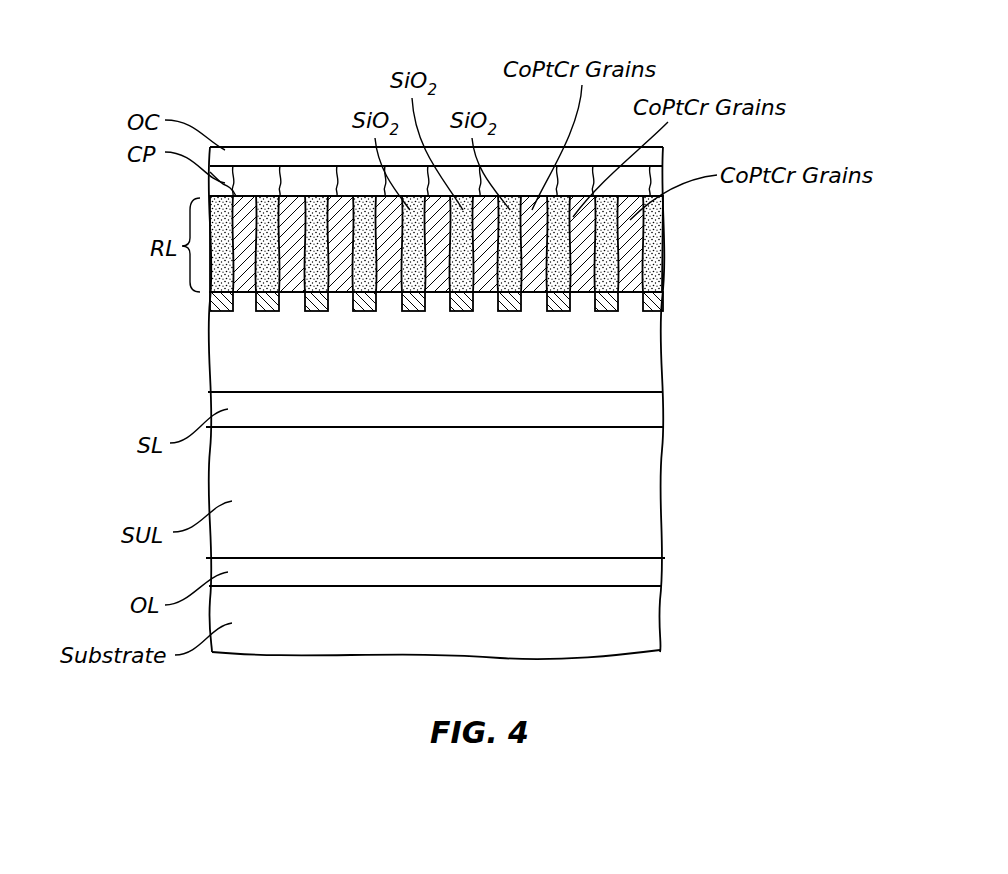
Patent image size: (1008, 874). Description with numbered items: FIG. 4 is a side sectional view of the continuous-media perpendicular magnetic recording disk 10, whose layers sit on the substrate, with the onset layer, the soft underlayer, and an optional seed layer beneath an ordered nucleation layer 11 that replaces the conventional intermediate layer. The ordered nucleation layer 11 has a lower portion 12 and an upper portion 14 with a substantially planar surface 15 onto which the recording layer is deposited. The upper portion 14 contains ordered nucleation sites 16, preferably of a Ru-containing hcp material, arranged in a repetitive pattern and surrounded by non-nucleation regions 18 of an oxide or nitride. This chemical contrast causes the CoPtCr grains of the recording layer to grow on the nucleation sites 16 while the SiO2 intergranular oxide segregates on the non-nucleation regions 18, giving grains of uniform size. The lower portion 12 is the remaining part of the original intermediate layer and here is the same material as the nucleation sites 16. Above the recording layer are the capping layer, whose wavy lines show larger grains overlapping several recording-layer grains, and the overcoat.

The continuous-media perpendicular magnetic recording disk 10 is at (150, 70).
The ordered nucleation layer 11 is at (680, 292).
The lower portion 12 is at (228, 349).
The upper portion 14 is at (186, 293).
The substantially planar surface 15 is at (652, 296).
The ordered nucleation sites 16 is at (537, 305).
The non-nucleation regions 18 is at (415, 300).